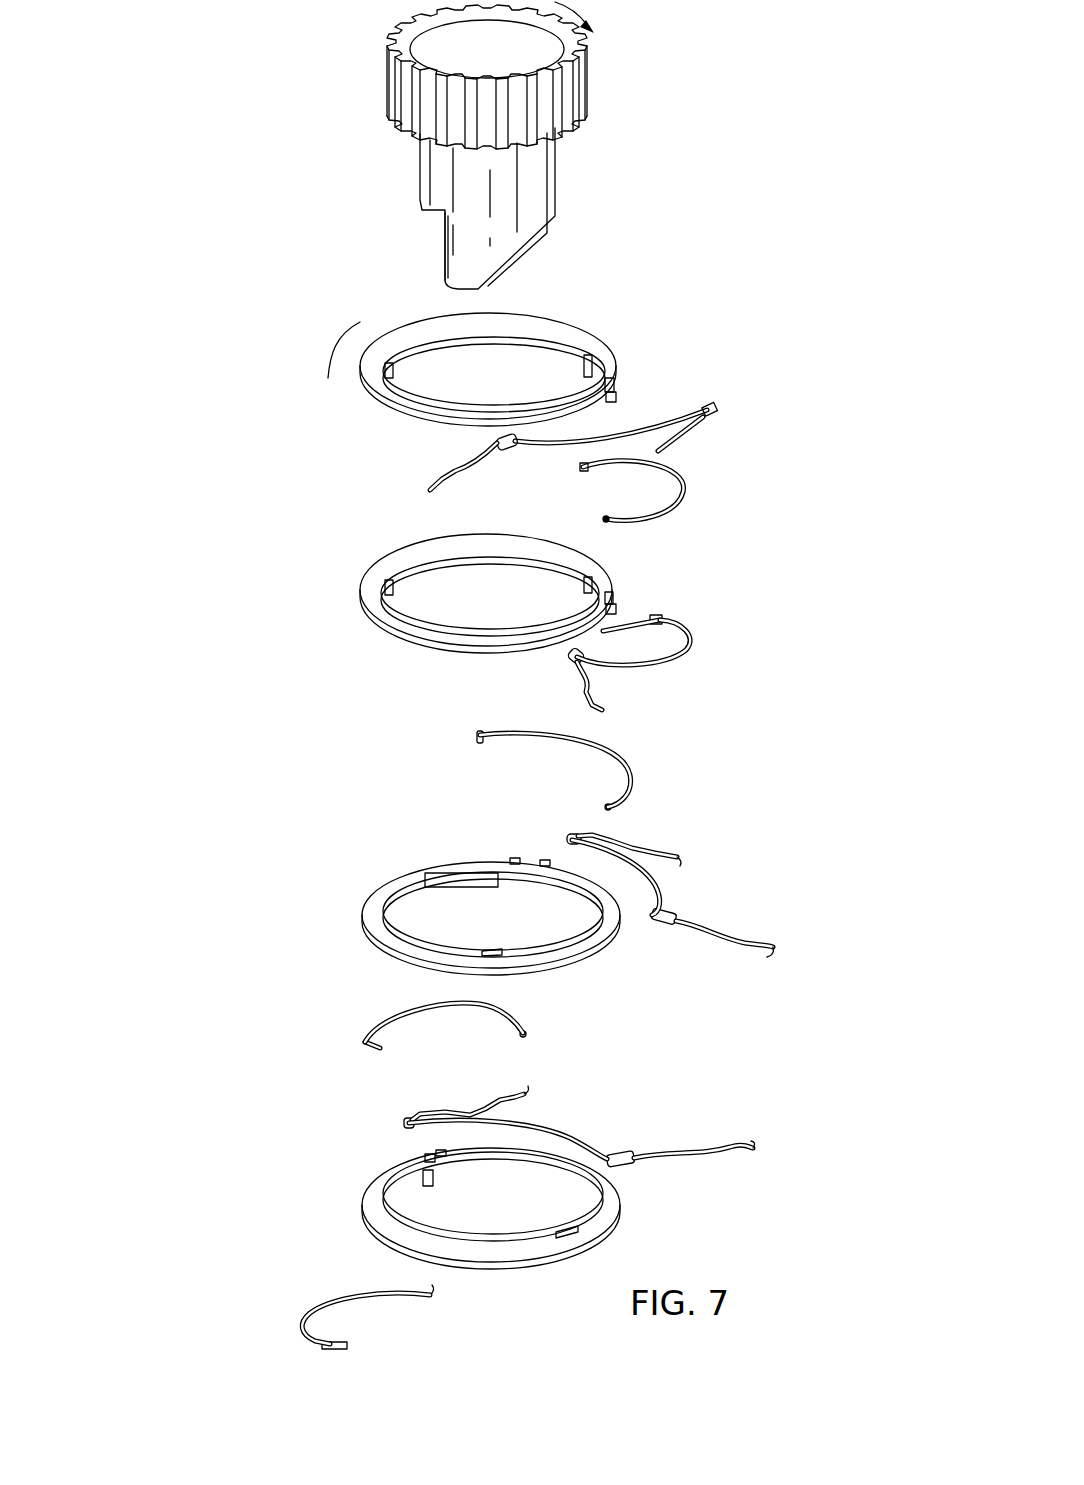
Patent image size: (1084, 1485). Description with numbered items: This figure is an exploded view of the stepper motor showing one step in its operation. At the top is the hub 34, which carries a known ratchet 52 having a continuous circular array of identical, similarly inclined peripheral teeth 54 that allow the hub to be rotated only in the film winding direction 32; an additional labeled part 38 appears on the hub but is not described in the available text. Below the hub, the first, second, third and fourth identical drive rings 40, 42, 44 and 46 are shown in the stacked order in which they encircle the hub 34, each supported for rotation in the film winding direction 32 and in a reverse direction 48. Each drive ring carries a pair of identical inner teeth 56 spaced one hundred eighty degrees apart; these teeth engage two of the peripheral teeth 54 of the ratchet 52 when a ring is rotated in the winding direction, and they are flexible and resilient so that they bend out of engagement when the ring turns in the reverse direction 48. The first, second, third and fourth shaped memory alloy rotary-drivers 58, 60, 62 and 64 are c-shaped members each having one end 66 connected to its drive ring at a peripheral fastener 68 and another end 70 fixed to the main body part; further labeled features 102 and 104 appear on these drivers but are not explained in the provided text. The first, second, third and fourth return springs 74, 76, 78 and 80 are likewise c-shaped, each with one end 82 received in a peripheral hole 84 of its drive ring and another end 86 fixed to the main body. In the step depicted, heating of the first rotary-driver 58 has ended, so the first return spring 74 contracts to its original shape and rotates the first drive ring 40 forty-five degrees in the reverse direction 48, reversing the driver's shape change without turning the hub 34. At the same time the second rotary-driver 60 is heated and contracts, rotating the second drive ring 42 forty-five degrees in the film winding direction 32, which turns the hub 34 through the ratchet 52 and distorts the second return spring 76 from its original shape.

The film winding direction 32 is at (593, 30).
The hub 34 is at (565, 182).
The key notch 38 is at (445, 262).
The first drive ring 40 is at (370, 400).
The second drive ring 42 is at (345, 597).
The third drive ring 44 is at (355, 899).
The fourth drive ring 46 is at (355, 1203).
The reverse direction 48 is at (330, 382).
The ratchet 52 is at (588, 80).
The peripheral teeth 54 is at (578, 126).
The inner teeth 56 is at (393, 370).
The first SMA rotary-driver 58 is at (622, 418).
The second SMA rotary-driver 60 is at (680, 658).
The third SMA rotary-driver 62 is at (670, 887).
The fourth SMA rotary-driver 64 is at (570, 1124).
The end of SMA rotary-driver 66 is at (716, 408).
The peripheral fastener 68 is at (614, 397).
The other end of SMA rotary-driver 70 is at (497, 442).
The first return spring 74 is at (695, 498).
The second return spring 76 is at (633, 757).
The third return spring 78 is at (370, 999).
The fourth return spring 80 is at (303, 1295).
The end of return spring 82 is at (605, 517).
The peripheral hole 84 is at (608, 383).
The other end of return spring 86 is at (583, 468).
The wire lead 102 is at (668, 443).
The wire tail 104 is at (430, 488).